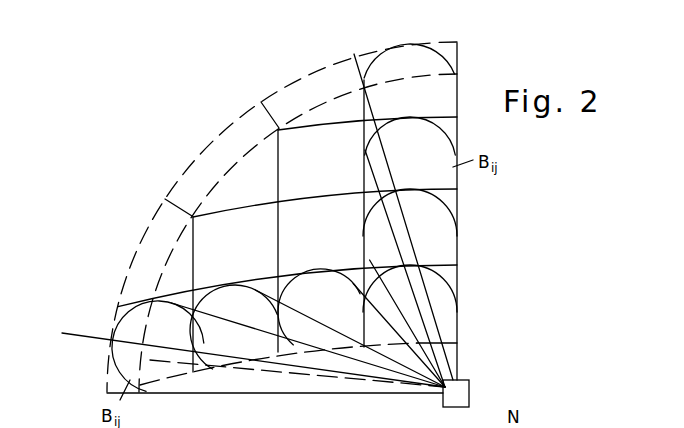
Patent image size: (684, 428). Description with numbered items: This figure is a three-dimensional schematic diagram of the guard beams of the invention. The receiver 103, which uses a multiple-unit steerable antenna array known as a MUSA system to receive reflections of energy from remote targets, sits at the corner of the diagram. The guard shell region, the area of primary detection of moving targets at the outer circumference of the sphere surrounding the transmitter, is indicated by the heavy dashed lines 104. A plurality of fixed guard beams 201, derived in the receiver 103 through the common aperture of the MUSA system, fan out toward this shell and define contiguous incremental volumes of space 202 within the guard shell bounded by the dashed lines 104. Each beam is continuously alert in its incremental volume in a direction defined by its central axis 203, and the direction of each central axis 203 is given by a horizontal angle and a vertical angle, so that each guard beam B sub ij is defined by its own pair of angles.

The heavy dashed lines 104 is at (354, 54).
The contiguous incremental volumes of space 202 is at (255, 155).
The central axis 203 is at (76, 334).
The fixed guard beam 201 is at (256, 387).
The receiver 103 is at (463, 386).